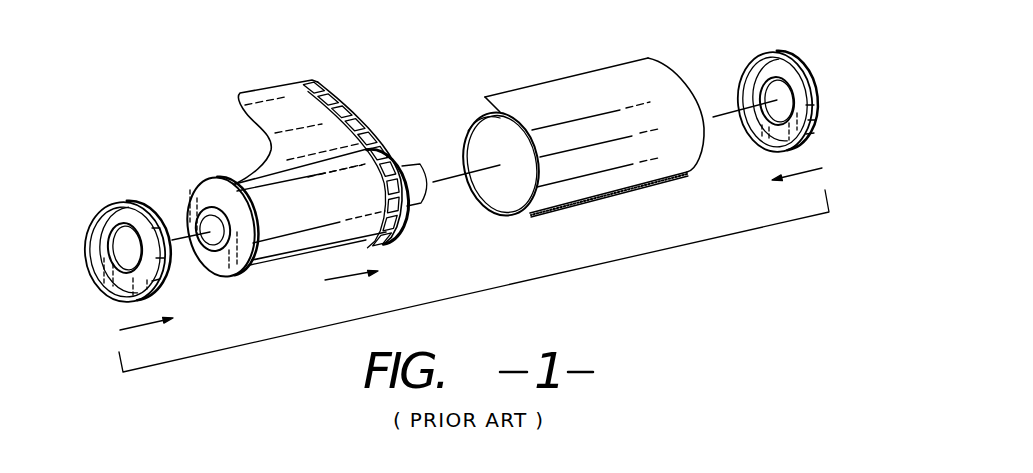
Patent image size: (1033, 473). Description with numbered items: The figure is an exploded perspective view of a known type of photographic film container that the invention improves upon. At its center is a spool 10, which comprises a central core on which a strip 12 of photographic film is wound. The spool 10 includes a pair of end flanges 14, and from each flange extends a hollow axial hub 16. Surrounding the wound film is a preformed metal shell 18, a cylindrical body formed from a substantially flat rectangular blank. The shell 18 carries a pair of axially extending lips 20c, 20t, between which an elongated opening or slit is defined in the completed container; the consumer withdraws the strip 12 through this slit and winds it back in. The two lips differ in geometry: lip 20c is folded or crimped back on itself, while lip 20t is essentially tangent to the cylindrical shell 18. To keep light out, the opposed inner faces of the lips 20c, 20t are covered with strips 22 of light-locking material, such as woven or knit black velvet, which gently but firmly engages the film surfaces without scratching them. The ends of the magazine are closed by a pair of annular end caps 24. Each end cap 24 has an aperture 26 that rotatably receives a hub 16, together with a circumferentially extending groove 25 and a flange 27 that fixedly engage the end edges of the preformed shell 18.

The spool 10 is at (319, 164).
The strip of photographic film 12 is at (293, 90).
The end flanges 14 is at (213, 180).
The hollow axial hubs 16 is at (428, 194).
The preformed metal shell 18 is at (540, 177).
The tangent lip 20t is at (564, 140).
The crimped lip 20c is at (486, 110).
The strips of light-locking material 22 is at (472, 134).
The annular end caps 24 is at (449, 163).
The circumferentially extending groove 25 is at (740, 62).
The aperture 26 is at (120, 258).
The flange 27 is at (90, 247).